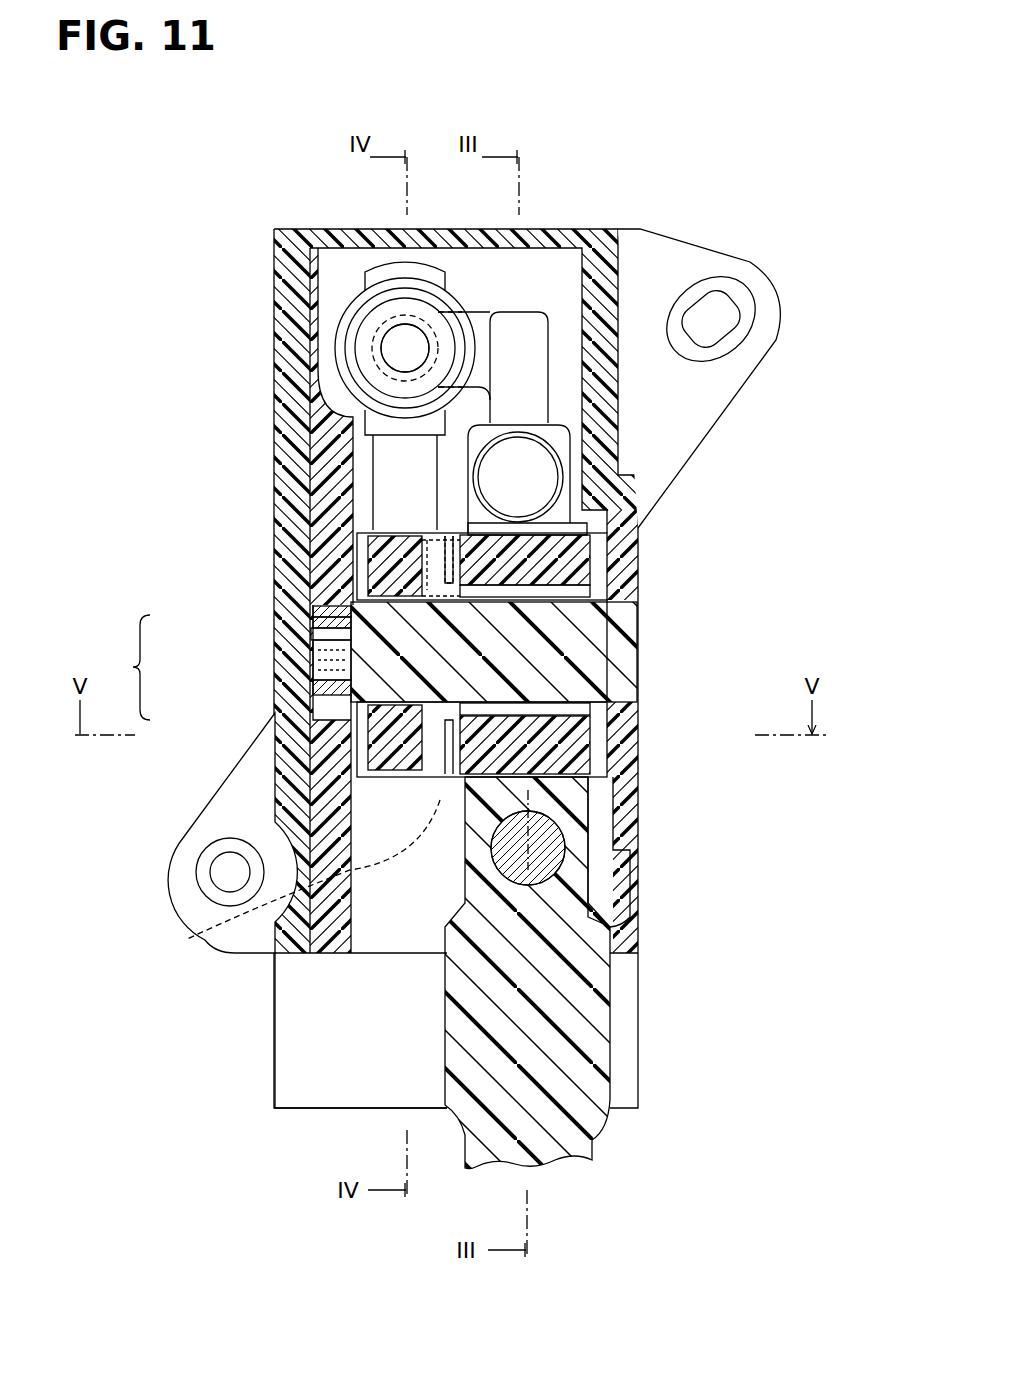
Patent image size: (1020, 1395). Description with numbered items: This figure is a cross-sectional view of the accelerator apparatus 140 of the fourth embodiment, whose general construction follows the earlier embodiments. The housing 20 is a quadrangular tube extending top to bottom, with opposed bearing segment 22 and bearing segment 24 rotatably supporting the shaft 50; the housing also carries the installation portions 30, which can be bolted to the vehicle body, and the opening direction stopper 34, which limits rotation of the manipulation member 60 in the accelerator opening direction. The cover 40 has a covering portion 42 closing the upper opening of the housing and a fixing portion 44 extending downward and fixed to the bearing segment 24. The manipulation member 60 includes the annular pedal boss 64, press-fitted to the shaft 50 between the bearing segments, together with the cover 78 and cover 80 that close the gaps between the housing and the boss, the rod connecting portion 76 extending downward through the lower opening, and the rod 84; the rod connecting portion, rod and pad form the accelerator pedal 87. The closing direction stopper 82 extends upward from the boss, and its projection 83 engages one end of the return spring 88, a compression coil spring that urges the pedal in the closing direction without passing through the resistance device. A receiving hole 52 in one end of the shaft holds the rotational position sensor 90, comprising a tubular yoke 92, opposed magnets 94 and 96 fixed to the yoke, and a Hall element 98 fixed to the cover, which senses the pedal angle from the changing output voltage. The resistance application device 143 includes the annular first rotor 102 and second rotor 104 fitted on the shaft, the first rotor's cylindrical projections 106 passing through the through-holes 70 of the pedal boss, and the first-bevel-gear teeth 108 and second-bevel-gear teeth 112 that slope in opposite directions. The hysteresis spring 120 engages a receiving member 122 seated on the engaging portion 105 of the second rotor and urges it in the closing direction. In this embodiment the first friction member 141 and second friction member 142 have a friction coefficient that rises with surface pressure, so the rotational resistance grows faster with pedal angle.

The housing 20 is at (273, 1072).
The bearing segment 22 is at (612, 490).
The bearing segment 24 is at (340, 432).
The installation portions 30 is at (766, 296).
The opening direction stopper 34 is at (330, 1085).
The cover 40 is at (273, 312).
The covering portion 42 is at (548, 233).
The fixing portion 44 is at (290, 362).
The shaft 50 is at (615, 648).
The receiving hole 52 is at (425, 692).
The manipulation member 60 is at (592, 866).
The pedal boss 64 is at (586, 712).
The through-holes 70 is at (612, 545).
The rod connecting portion 76 is at (600, 1025).
The cover 78 is at (614, 815).
The cover 80 is at (400, 788).
The closing direction stopper 82 is at (535, 330).
The projection 83 is at (612, 410).
The rod 84 is at (535, 852).
The accelerator pedal 87 is at (594, 1152).
The return spring 88 is at (520, 477).
The rotational position sensor 90 is at (128, 667).
The yoke 92 is at (320, 688).
The magnet 94 is at (320, 612).
The magnet 96 is at (320, 660).
The Hall element 98 is at (320, 624).
The first rotor 102 is at (545, 612).
The second rotor 104 is at (410, 697).
The engaging portion 105 is at (398, 452).
The projections 106 is at (606, 580).
The first-bevel-gear teeth 108 is at (436, 537).
The second-bevel-gear teeth 112 is at (356, 590).
The hysteresis spring 120 is at (372, 308).
The receiving member 122 is at (395, 345).
The accelerator apparatus 140 is at (622, 118).
The first friction member 141 is at (640, 563).
The second friction member 142 is at (352, 548).
The resistance application device 143 is at (367, 527).